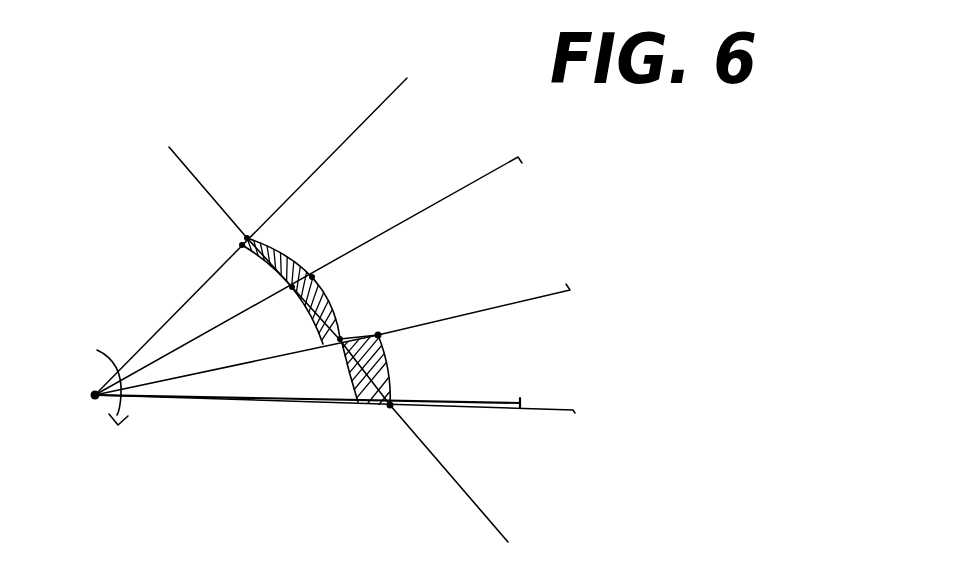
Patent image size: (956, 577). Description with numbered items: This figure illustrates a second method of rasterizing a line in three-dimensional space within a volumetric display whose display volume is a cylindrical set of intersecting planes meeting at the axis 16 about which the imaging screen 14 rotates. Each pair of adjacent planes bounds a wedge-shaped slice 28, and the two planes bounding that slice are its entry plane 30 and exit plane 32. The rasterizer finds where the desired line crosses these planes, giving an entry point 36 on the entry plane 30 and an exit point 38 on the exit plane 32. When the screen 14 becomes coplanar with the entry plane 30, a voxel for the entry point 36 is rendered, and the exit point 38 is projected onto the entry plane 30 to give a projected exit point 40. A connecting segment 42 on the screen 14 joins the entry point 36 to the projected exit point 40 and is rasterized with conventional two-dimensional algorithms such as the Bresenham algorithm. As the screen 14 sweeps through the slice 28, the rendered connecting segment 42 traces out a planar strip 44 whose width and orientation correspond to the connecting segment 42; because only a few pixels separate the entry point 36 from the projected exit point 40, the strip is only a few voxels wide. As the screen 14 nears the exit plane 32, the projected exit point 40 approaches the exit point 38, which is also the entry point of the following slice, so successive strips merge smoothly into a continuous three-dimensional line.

The imaging screen 14 is at (497, 417).
The axis 16 is at (87, 414).
The wedge-shaped slice 28 is at (565, 350).
The entry plane 30 is at (538, 291).
The exit plane 32 is at (563, 415).
The entry point 36 is at (335, 353).
The exit point 38 is at (392, 420).
The projected exit point 40 is at (390, 340).
The connecting segment 42 is at (365, 327).
The planar strip 44 is at (400, 370).